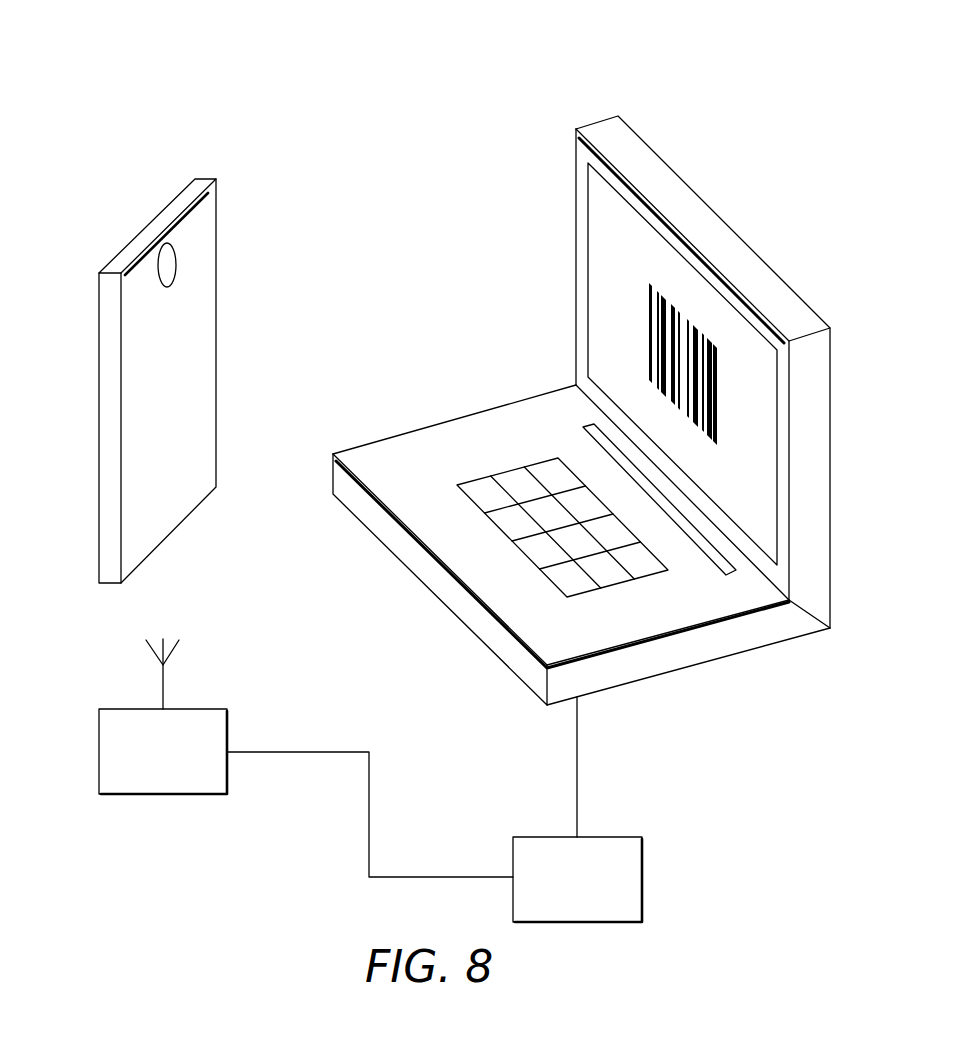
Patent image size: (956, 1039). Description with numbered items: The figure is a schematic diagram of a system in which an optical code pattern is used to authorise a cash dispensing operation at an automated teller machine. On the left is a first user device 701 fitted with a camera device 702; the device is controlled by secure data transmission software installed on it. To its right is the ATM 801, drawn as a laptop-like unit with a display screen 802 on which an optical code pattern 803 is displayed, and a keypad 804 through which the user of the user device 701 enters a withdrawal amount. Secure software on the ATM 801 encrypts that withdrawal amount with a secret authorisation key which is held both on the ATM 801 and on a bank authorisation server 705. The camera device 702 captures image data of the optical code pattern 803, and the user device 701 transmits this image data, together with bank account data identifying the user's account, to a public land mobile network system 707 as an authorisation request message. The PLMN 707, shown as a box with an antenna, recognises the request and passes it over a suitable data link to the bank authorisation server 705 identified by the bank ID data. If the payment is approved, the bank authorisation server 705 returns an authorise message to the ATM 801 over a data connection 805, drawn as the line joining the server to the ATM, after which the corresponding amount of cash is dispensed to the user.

The first user device 701 is at (201, 176).
The camera device 702 is at (172, 262).
The ATM 801 is at (637, 133).
The display screen 802 is at (600, 218).
The optical code pattern 803 is at (649, 313).
The keypad 804 is at (508, 468).
The data connection 805 is at (577, 762).
The public land mobile network system 707 is at (99, 724).
The bank authorisation server 705 is at (642, 850).